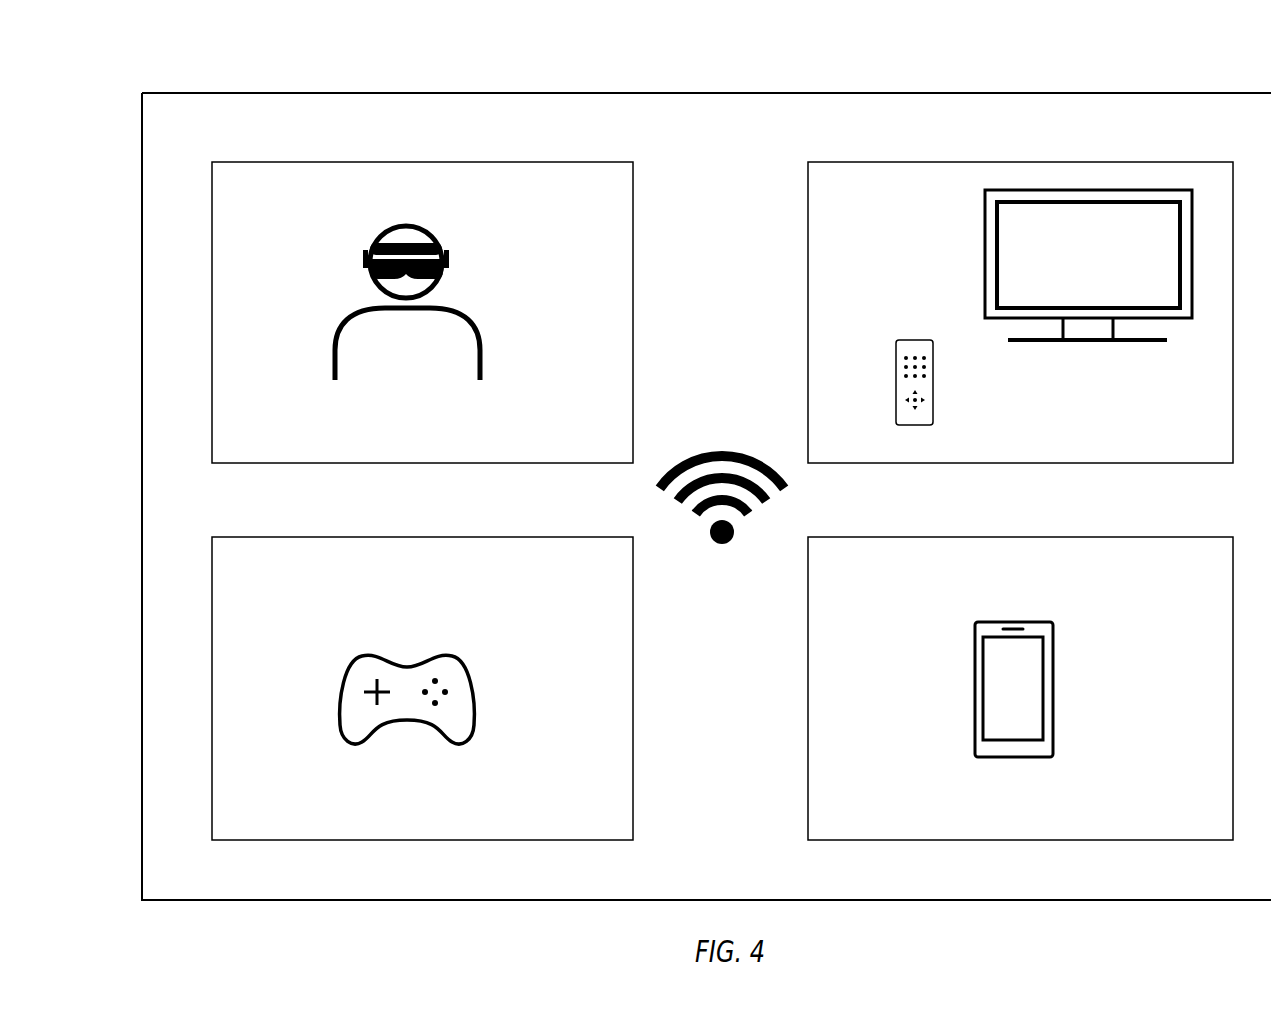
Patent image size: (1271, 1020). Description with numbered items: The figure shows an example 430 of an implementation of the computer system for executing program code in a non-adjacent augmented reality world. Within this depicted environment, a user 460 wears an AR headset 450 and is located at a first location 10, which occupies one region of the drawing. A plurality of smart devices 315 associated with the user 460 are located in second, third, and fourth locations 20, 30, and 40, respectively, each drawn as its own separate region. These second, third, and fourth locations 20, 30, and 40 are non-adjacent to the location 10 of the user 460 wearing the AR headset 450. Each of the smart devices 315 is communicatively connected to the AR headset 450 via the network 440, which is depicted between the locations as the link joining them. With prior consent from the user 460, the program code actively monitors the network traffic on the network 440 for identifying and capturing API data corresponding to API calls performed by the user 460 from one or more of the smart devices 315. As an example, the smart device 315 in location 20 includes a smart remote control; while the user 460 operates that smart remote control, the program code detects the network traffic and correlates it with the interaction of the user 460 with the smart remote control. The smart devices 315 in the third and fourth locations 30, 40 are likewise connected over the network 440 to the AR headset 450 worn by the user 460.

The example implementation of the computer system 430 is at (305, 84).
The first location 10 is at (260, 201).
The second location 20 is at (856, 201).
The third location 30 is at (260, 576).
The fourth location 40 is at (856, 576).
The AR headset 450 is at (358, 249).
The user 460 is at (499, 341).
The network 440 is at (711, 445).
The smart devices 315 is at (1210, 442).